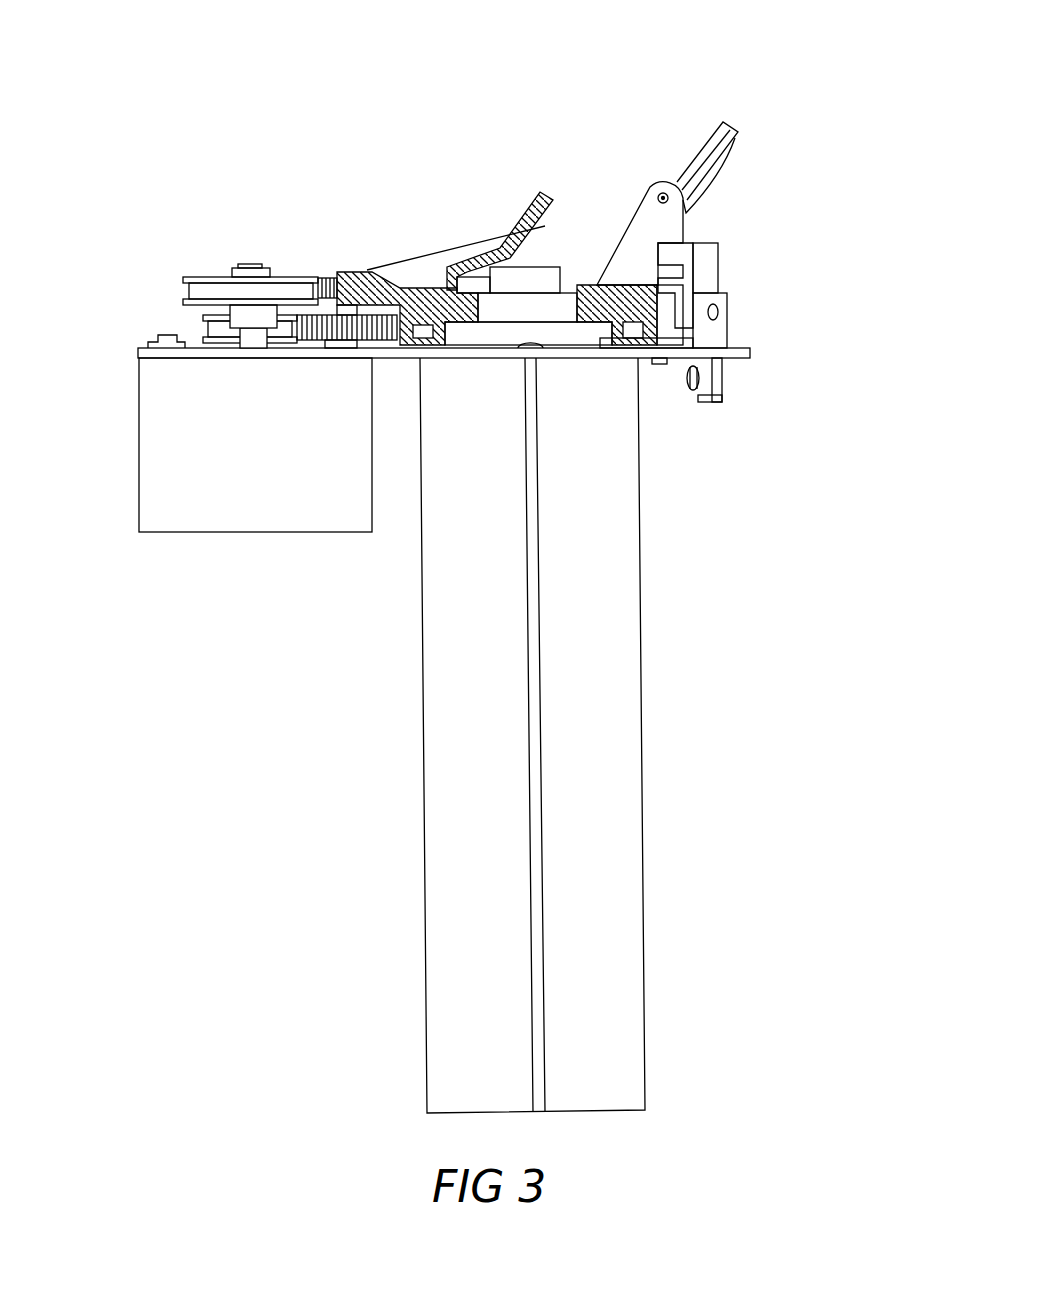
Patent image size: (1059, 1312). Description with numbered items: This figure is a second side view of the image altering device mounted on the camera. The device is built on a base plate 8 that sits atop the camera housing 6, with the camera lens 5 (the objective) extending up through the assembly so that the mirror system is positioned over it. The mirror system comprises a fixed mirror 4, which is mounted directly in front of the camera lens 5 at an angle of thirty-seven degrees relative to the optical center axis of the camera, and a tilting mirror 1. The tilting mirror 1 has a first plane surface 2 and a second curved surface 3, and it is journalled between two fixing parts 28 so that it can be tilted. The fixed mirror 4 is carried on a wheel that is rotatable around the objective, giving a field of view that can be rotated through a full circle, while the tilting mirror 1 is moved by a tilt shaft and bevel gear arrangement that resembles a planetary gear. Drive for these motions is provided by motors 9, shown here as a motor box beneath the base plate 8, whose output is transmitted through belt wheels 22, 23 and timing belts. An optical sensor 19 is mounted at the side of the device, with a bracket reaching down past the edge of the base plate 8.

The tilting mirror 1 is at (720, 137).
The first plane surface 2 is at (715, 127).
The second curved surface 3 is at (717, 168).
The fixed mirror 4 is at (510, 248).
The camera lens 5 is at (532, 275).
The camera housing 6 is at (452, 893).
The base plate 8 is at (192, 353).
The motor 9 is at (256, 502).
The optical sensor 19 is at (705, 257).
The belt wheel 22 is at (300, 277).
The belt wheel 23 is at (213, 315).
The fixing part 28 is at (658, 230).